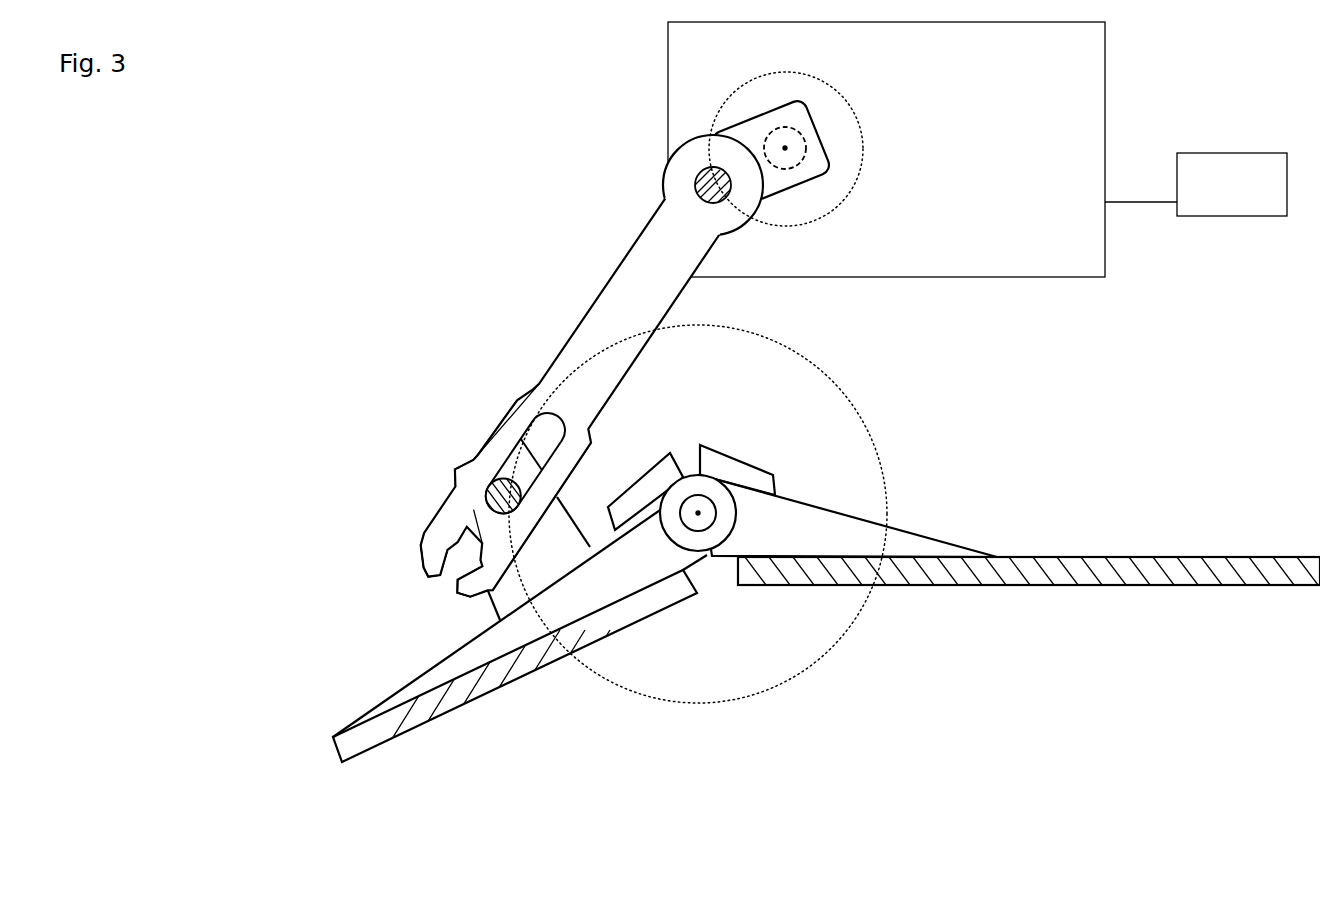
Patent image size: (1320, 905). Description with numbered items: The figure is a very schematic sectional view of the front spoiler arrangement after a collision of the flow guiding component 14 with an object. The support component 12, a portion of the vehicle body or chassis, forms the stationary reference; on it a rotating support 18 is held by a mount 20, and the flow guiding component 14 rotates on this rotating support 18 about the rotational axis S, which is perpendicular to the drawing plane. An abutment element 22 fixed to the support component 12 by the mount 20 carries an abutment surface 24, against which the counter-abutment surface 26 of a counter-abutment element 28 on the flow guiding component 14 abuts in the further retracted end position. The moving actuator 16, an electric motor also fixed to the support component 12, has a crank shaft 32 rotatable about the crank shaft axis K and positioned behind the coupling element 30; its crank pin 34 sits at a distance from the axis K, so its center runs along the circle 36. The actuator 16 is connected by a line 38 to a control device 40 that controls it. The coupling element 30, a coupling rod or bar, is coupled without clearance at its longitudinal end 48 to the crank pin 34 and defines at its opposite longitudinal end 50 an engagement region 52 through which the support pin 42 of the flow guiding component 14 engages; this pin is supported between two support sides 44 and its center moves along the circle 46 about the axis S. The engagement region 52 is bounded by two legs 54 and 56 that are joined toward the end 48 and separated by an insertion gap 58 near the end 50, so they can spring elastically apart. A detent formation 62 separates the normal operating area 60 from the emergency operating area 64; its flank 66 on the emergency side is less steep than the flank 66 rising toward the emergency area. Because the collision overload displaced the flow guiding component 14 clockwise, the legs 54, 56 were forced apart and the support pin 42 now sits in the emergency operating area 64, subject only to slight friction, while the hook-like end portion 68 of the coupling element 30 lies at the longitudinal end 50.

The support component 12 is at (1103, 598).
The flow guiding component 14 is at (496, 707).
The moving actuator 16 is at (981, 283).
The rotating support 18 is at (710, 550).
The mount 20 is at (930, 552).
The abutment element 22 is at (760, 477).
The abutment surface 24 is at (694, 456).
The counter-abutment surface 26 is at (681, 462).
The counter-abutment element 28 is at (639, 491).
The coupling element 30 is at (604, 292).
The crank shaft 32 is at (802, 172).
The crank pin 34 is at (705, 190).
The circle 36 is at (862, 138).
The line 38 is at (1142, 204).
The control device 40 is at (1248, 195).
The support pin 42 is at (494, 506).
The support side 44 is at (577, 560).
The circle 46 is at (604, 690).
The longitudinal end 48 is at (682, 140).
The longitudinal end 50 is at (386, 582).
The engagement region 52 is at (407, 433).
The leg 54 is at (493, 450).
The leg 56 is at (558, 477).
The insertion gap 58 is at (441, 595).
The normal operating area 60 is at (458, 539).
The detent formation 62 is at (456, 527).
The emergency operating area 64 is at (545, 435).
The flank 66 is at (478, 528).
The hook 68 is at (483, 576).
The crank shaft axis K is at (787, 148).
The rotational axis S is at (700, 514).